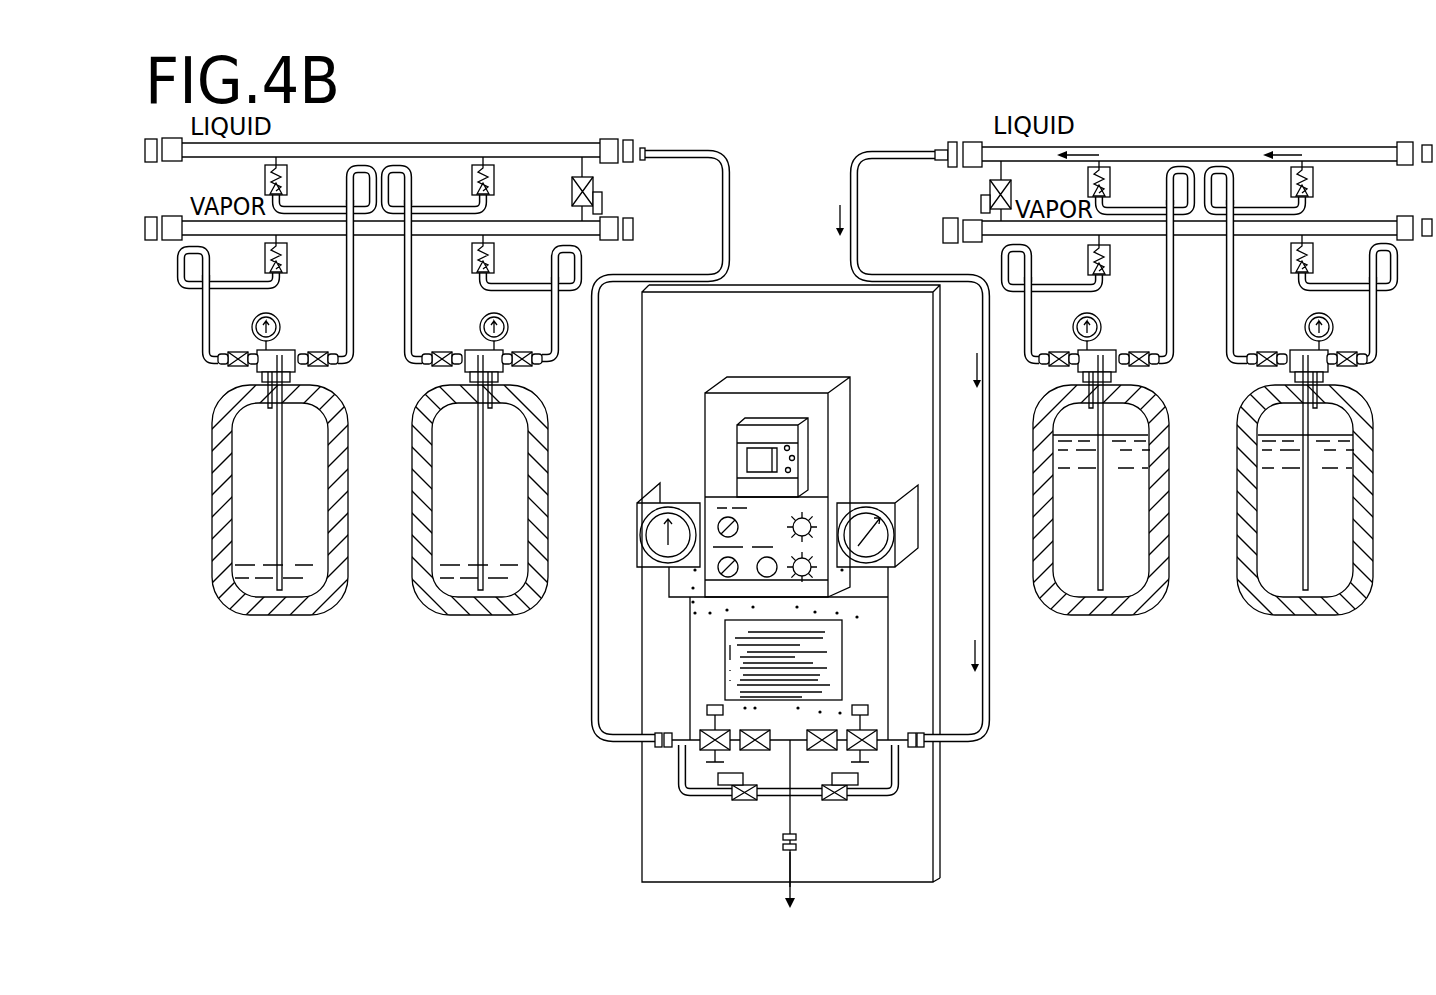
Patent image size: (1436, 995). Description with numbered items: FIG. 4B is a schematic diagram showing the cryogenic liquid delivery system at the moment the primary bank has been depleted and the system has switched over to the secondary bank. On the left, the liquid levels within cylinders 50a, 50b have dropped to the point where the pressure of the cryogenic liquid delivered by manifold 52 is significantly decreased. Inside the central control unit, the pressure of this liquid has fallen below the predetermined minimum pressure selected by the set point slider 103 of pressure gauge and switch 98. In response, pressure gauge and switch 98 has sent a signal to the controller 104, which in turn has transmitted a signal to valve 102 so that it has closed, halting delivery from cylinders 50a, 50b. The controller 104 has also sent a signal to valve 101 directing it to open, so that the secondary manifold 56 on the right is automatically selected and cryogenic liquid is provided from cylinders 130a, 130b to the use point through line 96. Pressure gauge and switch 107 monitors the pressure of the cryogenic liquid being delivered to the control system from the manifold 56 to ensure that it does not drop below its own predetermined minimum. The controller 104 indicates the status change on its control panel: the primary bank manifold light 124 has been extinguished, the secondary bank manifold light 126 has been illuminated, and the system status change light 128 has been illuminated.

The manifold 52 is at (411, 127).
The secondary manifold 56 is at (1206, 127).
The cylinder 50a is at (212, 580).
The cylinder 50b is at (417, 578).
The cylinder 130a is at (1040, 600).
The cylinder 130b is at (1240, 577).
The line 96 is at (793, 817).
The pressure gauge and switch 98 is at (673, 507).
The valve 101 is at (882, 767).
The valve 102 is at (700, 770).
The set point slider 103 is at (645, 548).
The controller 104 is at (810, 447).
The pressure gauge and switch 107 is at (866, 508).
The primary bank manifold light 124 is at (760, 580).
The secondary bank manifold light 126 is at (802, 580).
The system status change light 128 is at (807, 512).